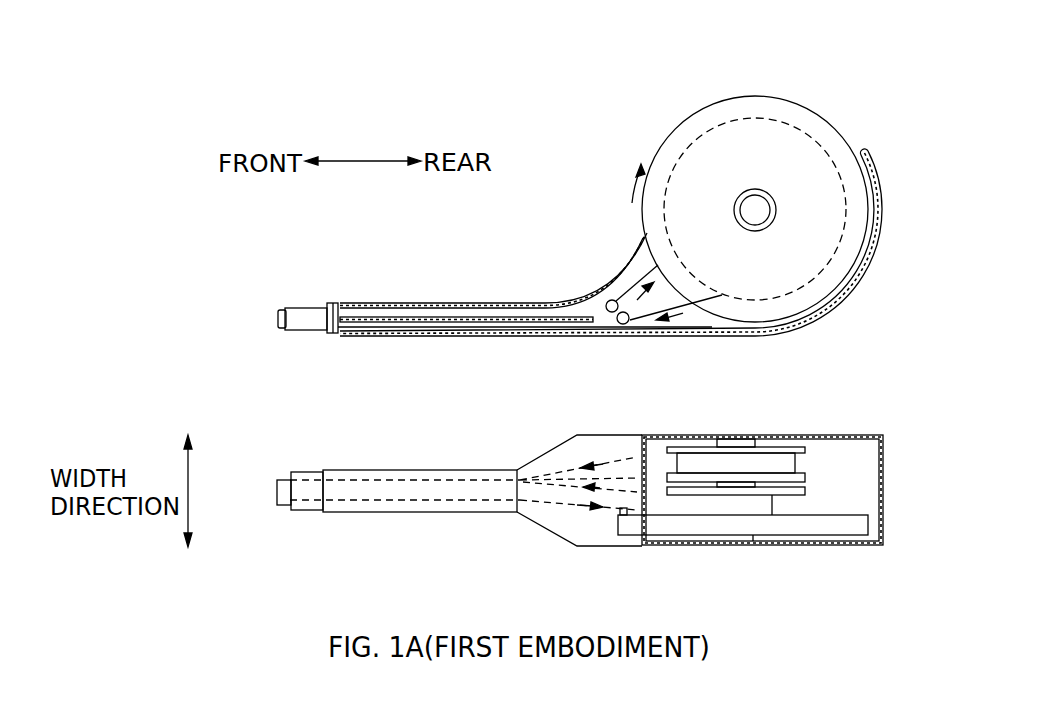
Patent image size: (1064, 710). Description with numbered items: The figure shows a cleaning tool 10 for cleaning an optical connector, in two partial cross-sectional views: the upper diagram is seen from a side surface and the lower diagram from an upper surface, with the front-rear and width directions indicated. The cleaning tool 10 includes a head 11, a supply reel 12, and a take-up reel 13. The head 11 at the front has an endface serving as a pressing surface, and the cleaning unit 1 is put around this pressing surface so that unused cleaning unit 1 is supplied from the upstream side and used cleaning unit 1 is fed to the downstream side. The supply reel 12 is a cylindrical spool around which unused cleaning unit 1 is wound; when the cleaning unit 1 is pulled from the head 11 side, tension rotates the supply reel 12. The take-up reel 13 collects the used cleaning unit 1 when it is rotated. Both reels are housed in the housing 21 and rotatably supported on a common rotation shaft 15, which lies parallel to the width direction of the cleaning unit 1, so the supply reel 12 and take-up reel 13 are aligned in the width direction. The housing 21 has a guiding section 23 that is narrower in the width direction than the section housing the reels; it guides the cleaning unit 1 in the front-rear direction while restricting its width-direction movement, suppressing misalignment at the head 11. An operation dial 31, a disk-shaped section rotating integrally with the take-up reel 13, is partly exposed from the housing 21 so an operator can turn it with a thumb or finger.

The cleaning unit 1 is at (277, 316).
The cleaning tool 10 is at (454, 110).
The head 11 is at (281, 308).
The supply reel 12 is at (755, 118).
The take-up reel 13 is at (807, 493).
The rotation shaft 15 is at (777, 208).
The housing 21 is at (866, 272).
The guiding section 23 is at (400, 304).
The operation dial 31 is at (817, 108).